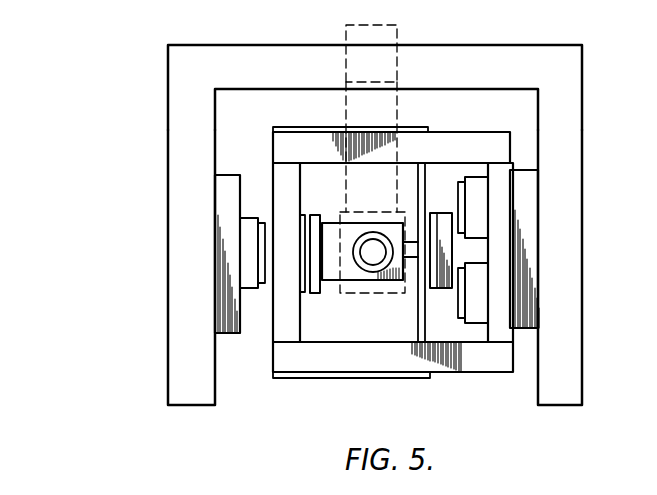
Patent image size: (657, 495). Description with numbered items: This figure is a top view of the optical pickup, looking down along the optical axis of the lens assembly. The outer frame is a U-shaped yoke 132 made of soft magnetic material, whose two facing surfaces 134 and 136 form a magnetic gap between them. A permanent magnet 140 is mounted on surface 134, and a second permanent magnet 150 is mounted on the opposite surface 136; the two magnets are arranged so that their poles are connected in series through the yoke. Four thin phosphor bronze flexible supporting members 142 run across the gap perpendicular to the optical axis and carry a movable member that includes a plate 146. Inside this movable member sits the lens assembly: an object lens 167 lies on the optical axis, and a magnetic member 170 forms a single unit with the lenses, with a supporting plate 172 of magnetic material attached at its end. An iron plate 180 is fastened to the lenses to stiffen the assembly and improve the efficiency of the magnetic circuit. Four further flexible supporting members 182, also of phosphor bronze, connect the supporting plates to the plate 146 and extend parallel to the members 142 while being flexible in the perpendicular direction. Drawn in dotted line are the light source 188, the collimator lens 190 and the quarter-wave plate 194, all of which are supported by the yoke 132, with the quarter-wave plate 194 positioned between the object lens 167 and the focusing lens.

The U-shaped yoke 132 is at (563, 110).
The surface of yoke 134 is at (543, 375).
The surface of yoke 136 is at (218, 355).
The permanent magnet 140 is at (528, 232).
The flexible supporting members 142 is at (465, 142).
The plate 146 is at (287, 332).
The permanent magnet 150 is at (228, 230).
The object lens 167 is at (363, 258).
The magnetic member 170 is at (438, 290).
The supporting plate 172 is at (425, 318).
The iron plate 180 is at (314, 215).
The flexible supporting members 182 is at (331, 127).
The light source 188 is at (386, 34).
The collimator lens 190 is at (383, 101).
The quarter-wave plate 194 is at (390, 297).